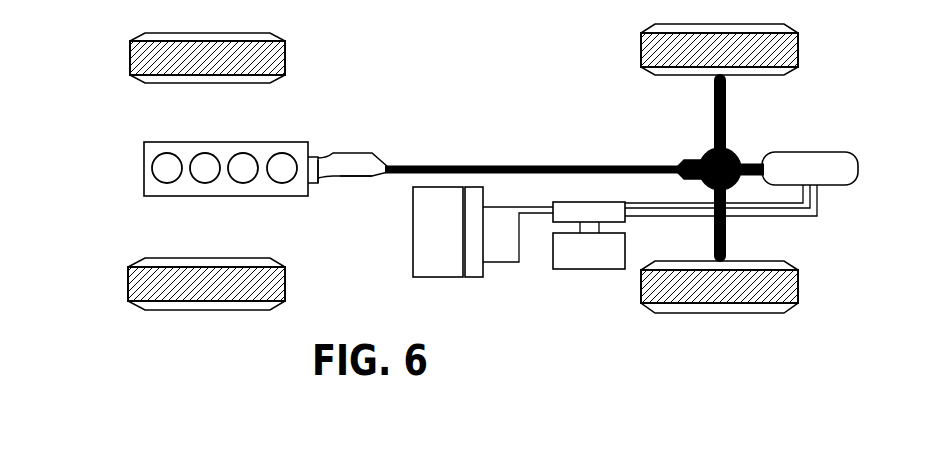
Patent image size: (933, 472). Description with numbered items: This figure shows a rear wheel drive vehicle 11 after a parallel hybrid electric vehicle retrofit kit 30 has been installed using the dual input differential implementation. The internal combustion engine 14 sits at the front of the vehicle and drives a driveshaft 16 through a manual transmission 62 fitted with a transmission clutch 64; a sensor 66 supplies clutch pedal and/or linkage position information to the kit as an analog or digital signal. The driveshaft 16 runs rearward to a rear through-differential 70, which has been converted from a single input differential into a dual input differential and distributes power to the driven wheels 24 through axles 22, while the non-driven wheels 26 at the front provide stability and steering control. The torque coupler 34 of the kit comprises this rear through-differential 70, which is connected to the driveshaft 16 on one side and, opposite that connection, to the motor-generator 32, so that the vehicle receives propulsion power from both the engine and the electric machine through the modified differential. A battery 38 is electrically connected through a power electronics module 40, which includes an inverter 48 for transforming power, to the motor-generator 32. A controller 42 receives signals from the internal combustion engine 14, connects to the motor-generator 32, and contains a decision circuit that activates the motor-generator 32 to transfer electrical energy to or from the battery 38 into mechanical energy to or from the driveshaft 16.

The hybrid vehicle 11 is at (392, 104).
The internal combustion engine 14 is at (265, 140).
The driveshaft 16 is at (648, 164).
The axles 22 is at (727, 115).
The driven wheels 24 is at (797, 68).
The non-driven wheels 26 is at (137, 76).
The parallel hybrid electric vehicle retrofit kit 30 is at (580, 310).
The motor-generator 32 is at (847, 163).
The torque coupler 34 is at (695, 184).
The battery 38 is at (448, 188).
The power electronics module 40 is at (475, 188).
The controller 42 is at (521, 272).
The inverter 48 is at (555, 202).
The manual transmission 62 is at (332, 155).
The transmission clutch 64 is at (337, 175).
The sensor 66 is at (313, 173).
The rear through-differential 70 is at (740, 153).